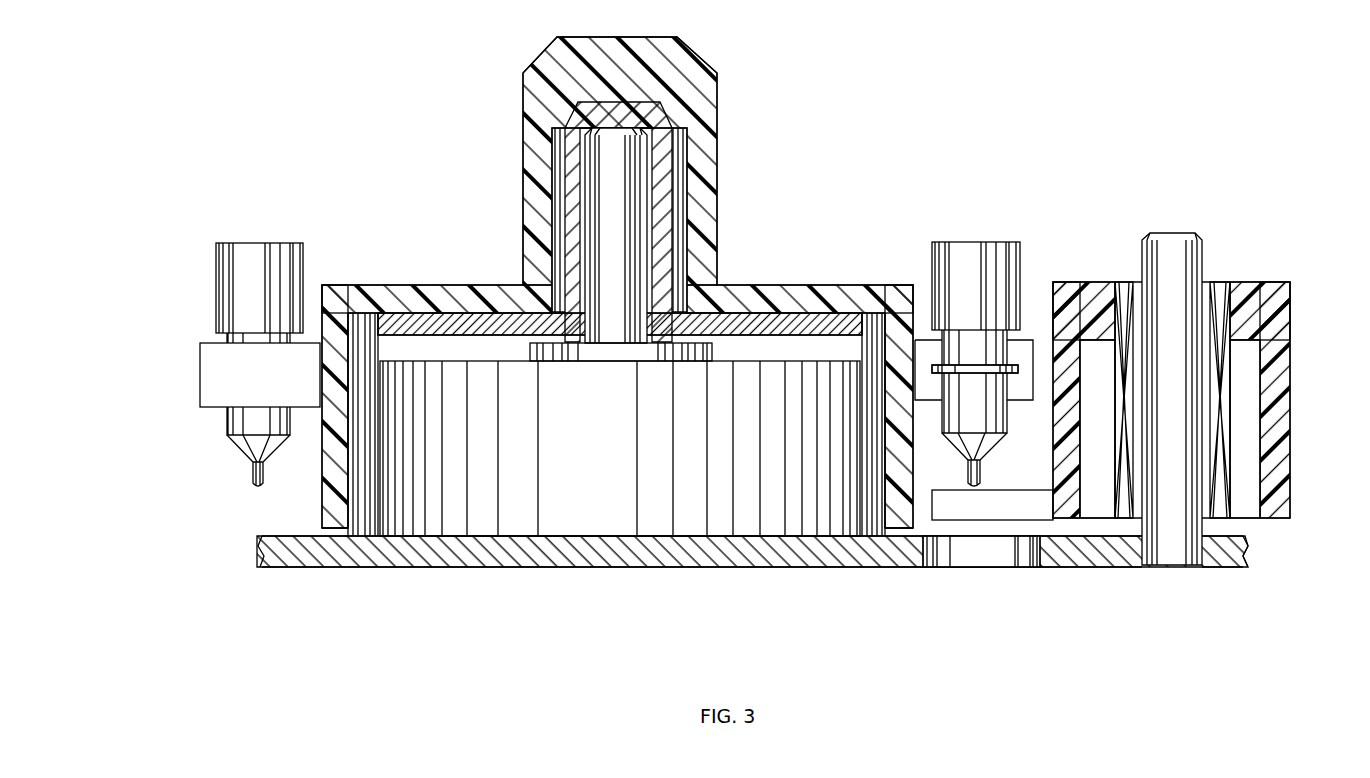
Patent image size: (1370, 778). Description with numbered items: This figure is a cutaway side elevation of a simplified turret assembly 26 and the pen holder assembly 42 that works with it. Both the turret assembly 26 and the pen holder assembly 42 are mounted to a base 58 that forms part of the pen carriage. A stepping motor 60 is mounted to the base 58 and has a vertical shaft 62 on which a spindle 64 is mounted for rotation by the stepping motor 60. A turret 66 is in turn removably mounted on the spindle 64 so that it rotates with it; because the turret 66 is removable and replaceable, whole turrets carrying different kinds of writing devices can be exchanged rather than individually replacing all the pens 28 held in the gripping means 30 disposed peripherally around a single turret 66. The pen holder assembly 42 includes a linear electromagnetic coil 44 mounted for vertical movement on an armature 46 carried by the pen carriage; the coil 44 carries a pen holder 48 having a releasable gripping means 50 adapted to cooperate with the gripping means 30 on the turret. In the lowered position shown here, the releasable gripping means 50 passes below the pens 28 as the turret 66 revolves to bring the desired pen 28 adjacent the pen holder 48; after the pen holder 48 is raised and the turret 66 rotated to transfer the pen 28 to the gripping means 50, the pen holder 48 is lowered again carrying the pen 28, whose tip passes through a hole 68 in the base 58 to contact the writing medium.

The turret assembly 26 is at (622, 327).
The pen 28 is at (288, 248).
The gripping means 30 is at (215, 383).
The pen holder assembly 42 is at (1206, 348).
The linear electromagnetic coil 44 is at (1225, 413).
The armature 46 is at (1178, 275).
The pen holder 48 is at (1277, 297).
The releasable gripping means 50 is at (1015, 508).
The base 58 is at (637, 548).
The stepping motor 60 is at (561, 528).
The vertical shaft 62 is at (617, 268).
The spindle 64 is at (665, 204).
The turret 66 is at (692, 102).
The hole 68 is at (970, 550).